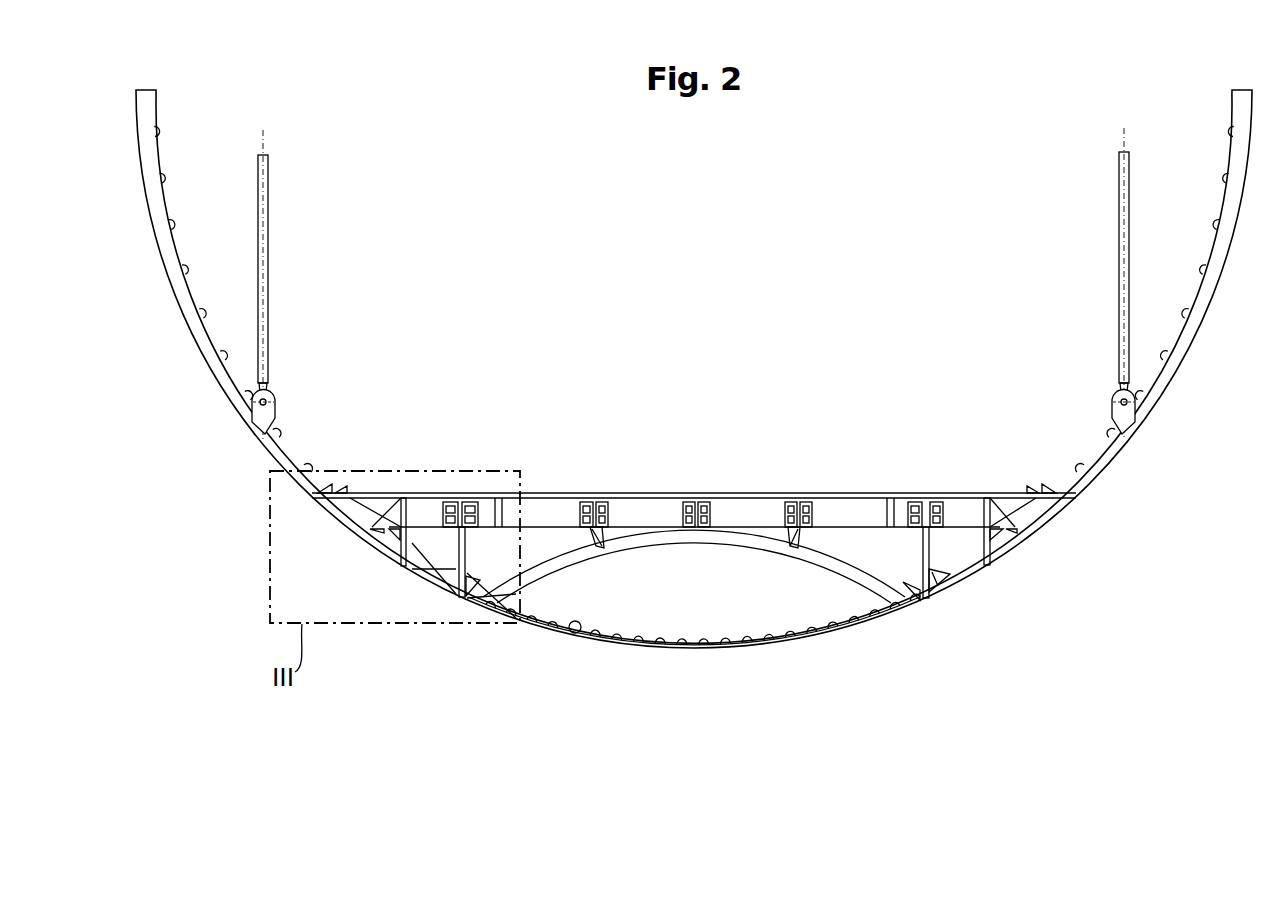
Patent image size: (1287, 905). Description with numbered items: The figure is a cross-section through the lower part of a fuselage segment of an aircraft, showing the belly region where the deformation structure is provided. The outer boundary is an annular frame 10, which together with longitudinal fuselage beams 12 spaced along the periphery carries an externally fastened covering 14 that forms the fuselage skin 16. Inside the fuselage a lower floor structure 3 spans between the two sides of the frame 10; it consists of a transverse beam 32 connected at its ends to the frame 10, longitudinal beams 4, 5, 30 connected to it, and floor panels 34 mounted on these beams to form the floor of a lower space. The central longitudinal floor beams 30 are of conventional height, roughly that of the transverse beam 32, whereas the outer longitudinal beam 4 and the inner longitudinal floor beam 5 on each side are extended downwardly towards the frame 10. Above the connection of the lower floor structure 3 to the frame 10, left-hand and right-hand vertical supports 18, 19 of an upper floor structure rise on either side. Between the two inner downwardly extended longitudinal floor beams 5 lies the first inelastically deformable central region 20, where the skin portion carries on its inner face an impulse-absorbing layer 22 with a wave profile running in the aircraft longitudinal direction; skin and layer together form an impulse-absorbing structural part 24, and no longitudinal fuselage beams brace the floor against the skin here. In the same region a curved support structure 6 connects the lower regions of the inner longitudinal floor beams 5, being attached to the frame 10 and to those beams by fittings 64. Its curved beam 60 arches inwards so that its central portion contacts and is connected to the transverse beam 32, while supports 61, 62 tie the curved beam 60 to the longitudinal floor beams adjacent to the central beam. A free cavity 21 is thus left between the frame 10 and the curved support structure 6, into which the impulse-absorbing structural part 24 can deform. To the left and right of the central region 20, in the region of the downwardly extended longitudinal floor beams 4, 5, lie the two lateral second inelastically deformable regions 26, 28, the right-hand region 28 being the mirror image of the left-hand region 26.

The lower floor structure 3 is at (694, 458).
The longitudinal beam 4 is at (398, 552).
The inner downwardly extended longitudinal floor beam 5 is at (446, 590).
The curved support structure 6 is at (694, 575).
The annular frame 10 is at (150, 130).
The longitudinal fuselage beam 12 is at (158, 228).
The covering 14 is at (192, 356).
The fuselage skin 16 is at (1197, 345).
The left-hand vertical support 18 is at (266, 232).
The right-hand vertical support 19 is at (1122, 218).
The first inelastically deformable central region 20 is at (786, 660).
The free cavity 21 is at (712, 620).
The impulse-absorbing layer 22 is at (577, 634).
The impulse-absorbing structural part 24 is at (654, 660).
The second inelastically deformable region 26 is at (406, 584).
The second inelastically deformable region 28 is at (968, 604).
The central longitudinal floor beam 30 is at (600, 505).
The transverse beam 32 is at (548, 500).
The floor panel 34 is at (461, 505).
The curved beam 60 is at (832, 563).
The support 61 is at (604, 548).
The support 62 is at (788, 547).
The fitting 64 is at (482, 608).